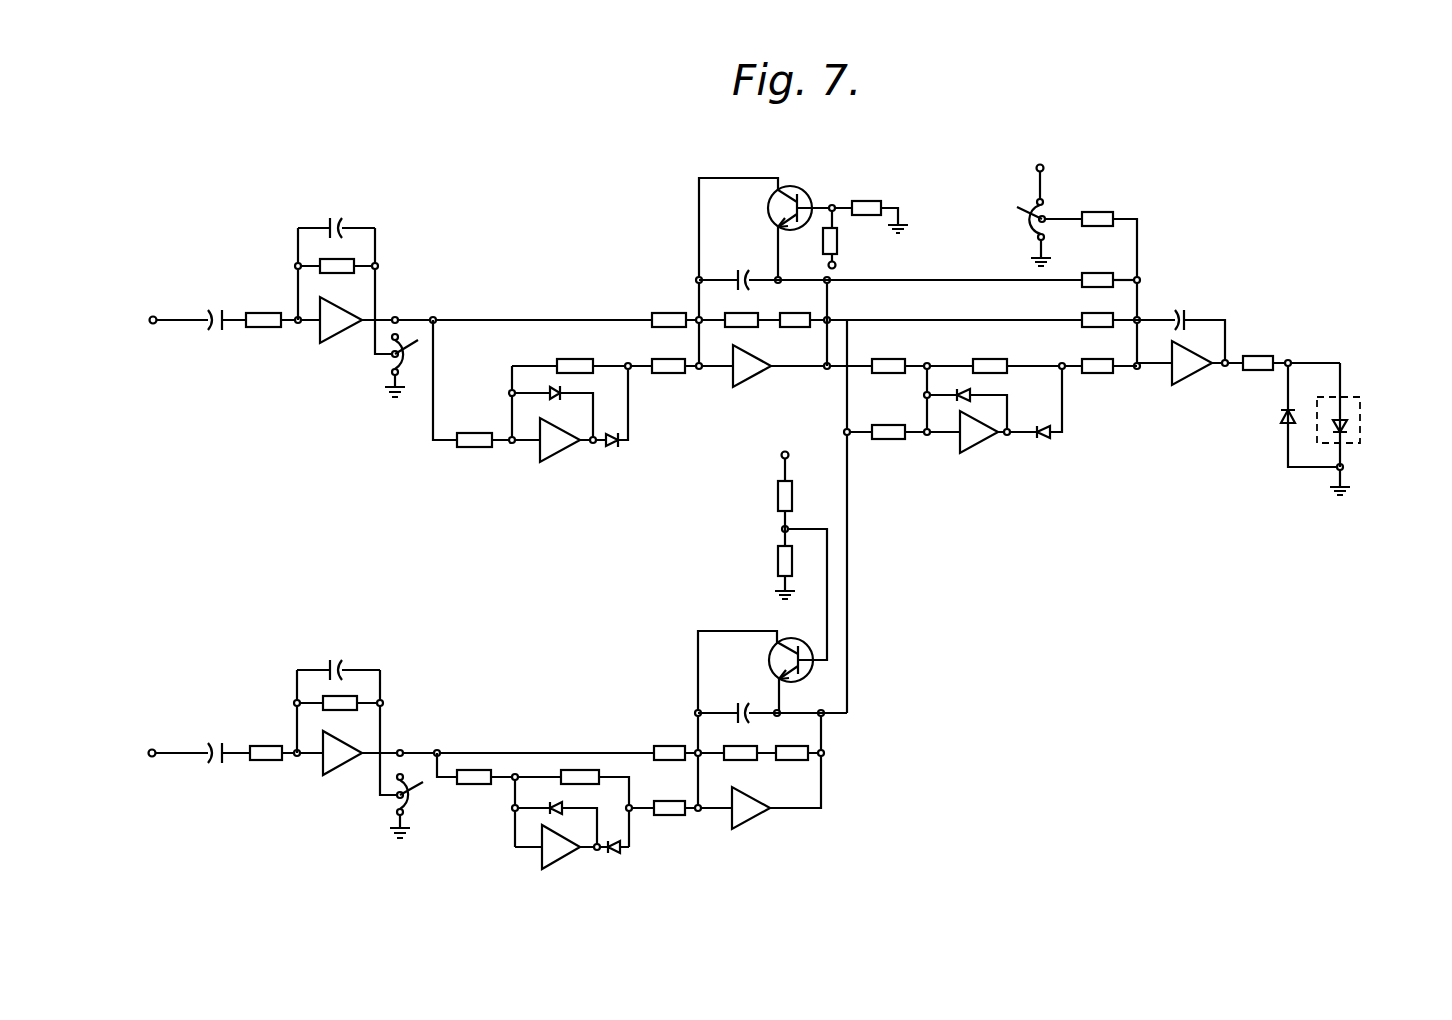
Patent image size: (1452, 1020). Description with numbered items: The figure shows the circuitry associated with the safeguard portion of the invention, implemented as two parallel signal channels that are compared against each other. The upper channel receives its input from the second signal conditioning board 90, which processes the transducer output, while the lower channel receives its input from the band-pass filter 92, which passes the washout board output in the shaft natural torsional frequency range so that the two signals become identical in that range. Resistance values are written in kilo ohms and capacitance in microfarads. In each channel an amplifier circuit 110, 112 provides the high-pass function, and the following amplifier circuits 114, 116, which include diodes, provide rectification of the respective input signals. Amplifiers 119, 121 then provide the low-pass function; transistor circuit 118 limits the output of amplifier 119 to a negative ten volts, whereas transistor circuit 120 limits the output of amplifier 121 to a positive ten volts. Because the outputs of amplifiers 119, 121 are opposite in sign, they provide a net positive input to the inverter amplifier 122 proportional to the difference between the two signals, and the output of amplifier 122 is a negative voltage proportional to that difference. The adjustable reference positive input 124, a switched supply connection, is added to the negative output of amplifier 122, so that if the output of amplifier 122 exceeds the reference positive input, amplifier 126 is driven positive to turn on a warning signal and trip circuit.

The second signal conditioning board 90 is at (144, 322).
The band-pass filter 92 is at (144, 753).
The amplifier circuit 110 is at (390, 281).
The amplifier circuit 112 is at (390, 713).
The amplifier circuit 114 is at (530, 447).
The amplifier circuit 116 is at (512, 852).
The transistor circuit 118 is at (806, 188).
The amplifier 119 is at (758, 380).
The transistor circuit 120 is at (755, 626).
The amplifier 121 is at (760, 826).
The inverter amplifier 122 is at (985, 446).
The adjustable reference positive input 124 is at (1053, 200).
The amplifier 126 is at (1195, 375).